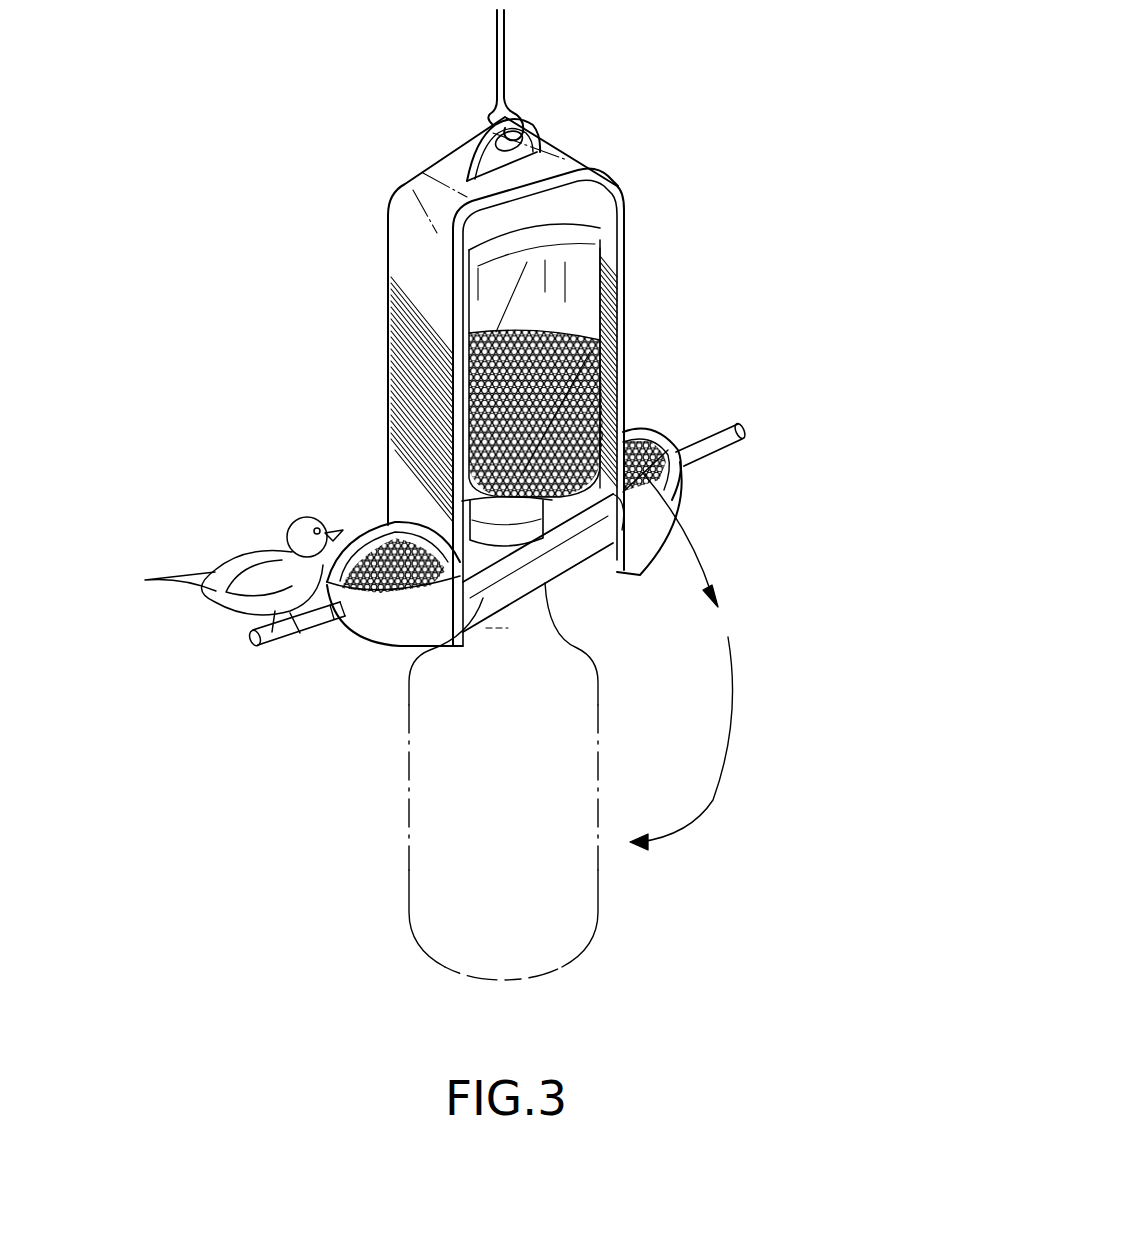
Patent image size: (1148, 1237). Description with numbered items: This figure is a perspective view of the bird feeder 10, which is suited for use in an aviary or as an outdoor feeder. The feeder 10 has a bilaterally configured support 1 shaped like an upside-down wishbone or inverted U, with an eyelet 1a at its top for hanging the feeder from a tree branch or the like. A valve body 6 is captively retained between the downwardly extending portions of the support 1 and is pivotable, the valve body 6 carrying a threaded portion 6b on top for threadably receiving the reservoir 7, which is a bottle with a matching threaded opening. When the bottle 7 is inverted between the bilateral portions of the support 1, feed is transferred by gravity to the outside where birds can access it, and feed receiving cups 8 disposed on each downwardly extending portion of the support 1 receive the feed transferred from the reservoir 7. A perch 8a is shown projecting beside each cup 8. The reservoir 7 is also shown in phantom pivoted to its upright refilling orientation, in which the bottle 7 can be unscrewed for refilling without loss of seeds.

The feeder 10 is at (675, 133).
The bilaterally configured support 1 is at (398, 248).
The eyelet 1a is at (489, 136).
The reservoir 7 is at (587, 284).
The valve body 6 is at (578, 568).
The threaded portion 6b is at (533, 533).
The feed receiving cups 8 is at (668, 478).
The perch 8a is at (708, 433).